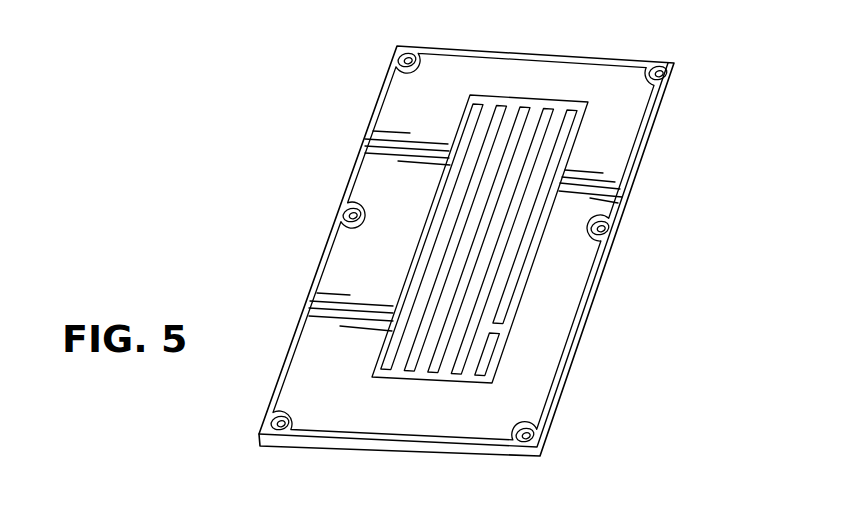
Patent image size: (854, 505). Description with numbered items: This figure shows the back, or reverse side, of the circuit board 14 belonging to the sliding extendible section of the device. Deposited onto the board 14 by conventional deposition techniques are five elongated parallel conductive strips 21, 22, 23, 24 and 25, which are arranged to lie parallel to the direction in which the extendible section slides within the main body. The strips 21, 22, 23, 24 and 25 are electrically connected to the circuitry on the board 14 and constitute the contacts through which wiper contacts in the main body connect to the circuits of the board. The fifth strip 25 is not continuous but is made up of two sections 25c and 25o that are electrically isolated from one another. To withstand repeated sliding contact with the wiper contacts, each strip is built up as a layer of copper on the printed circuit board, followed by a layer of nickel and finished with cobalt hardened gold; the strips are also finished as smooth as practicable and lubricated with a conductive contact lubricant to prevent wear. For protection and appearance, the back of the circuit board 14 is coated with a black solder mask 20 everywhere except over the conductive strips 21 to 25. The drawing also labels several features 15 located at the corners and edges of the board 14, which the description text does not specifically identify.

The circuit board 14 is at (558, 312).
The mounting holes 15 is at (405, 61).
The black solder mask 20 is at (617, 158).
The conductive strip 21 is at (480, 103).
The conductive strip 22 is at (501, 104).
The conductive strip 23 is at (526, 106).
The conductive strip 24 is at (549, 107).
The conductive strip 25 is at (573, 108).
The section of strip 25 25o is at (525, 289).
The section of strip 25 25c is at (486, 354).